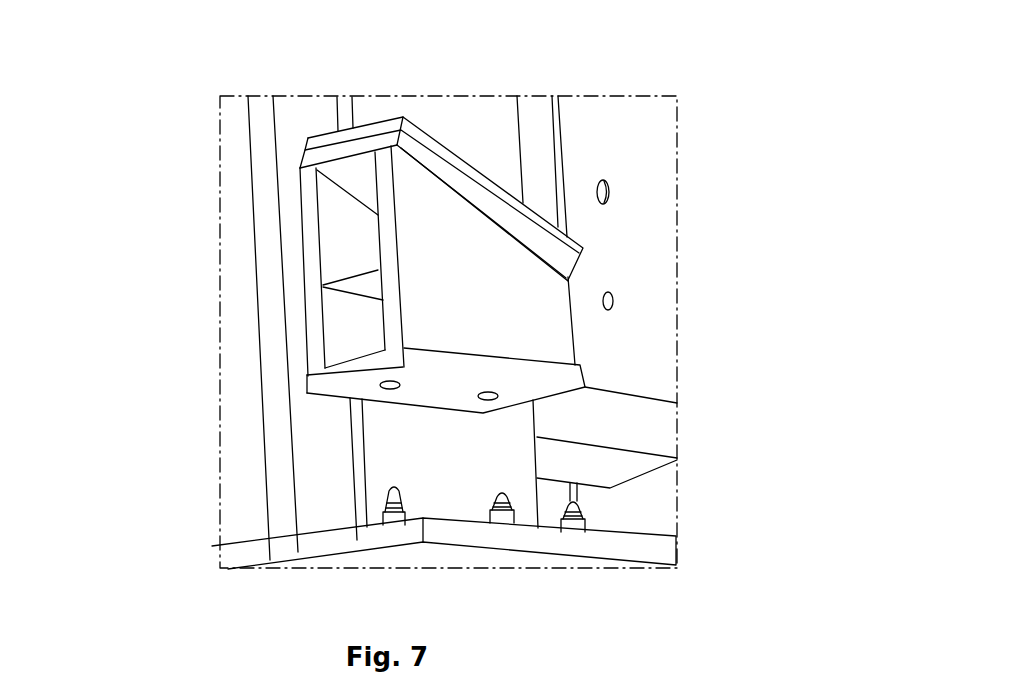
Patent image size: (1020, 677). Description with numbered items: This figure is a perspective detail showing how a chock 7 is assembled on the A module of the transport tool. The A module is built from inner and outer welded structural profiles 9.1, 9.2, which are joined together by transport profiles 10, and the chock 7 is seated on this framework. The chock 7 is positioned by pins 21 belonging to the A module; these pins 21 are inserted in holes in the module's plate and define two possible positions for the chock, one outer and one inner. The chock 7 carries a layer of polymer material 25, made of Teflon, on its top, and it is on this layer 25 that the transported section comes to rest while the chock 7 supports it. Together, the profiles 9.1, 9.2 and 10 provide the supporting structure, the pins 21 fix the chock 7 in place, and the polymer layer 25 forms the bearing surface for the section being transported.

The chock 7 is at (437, 253).
The layer of polymer material 25 is at (418, 130).
The inner welded structural profile 9.1 is at (623, 138).
The outer welded structural profile 9.2 is at (413, 455).
The transport profile 10 is at (648, 430).
The pin 21 is at (490, 506).